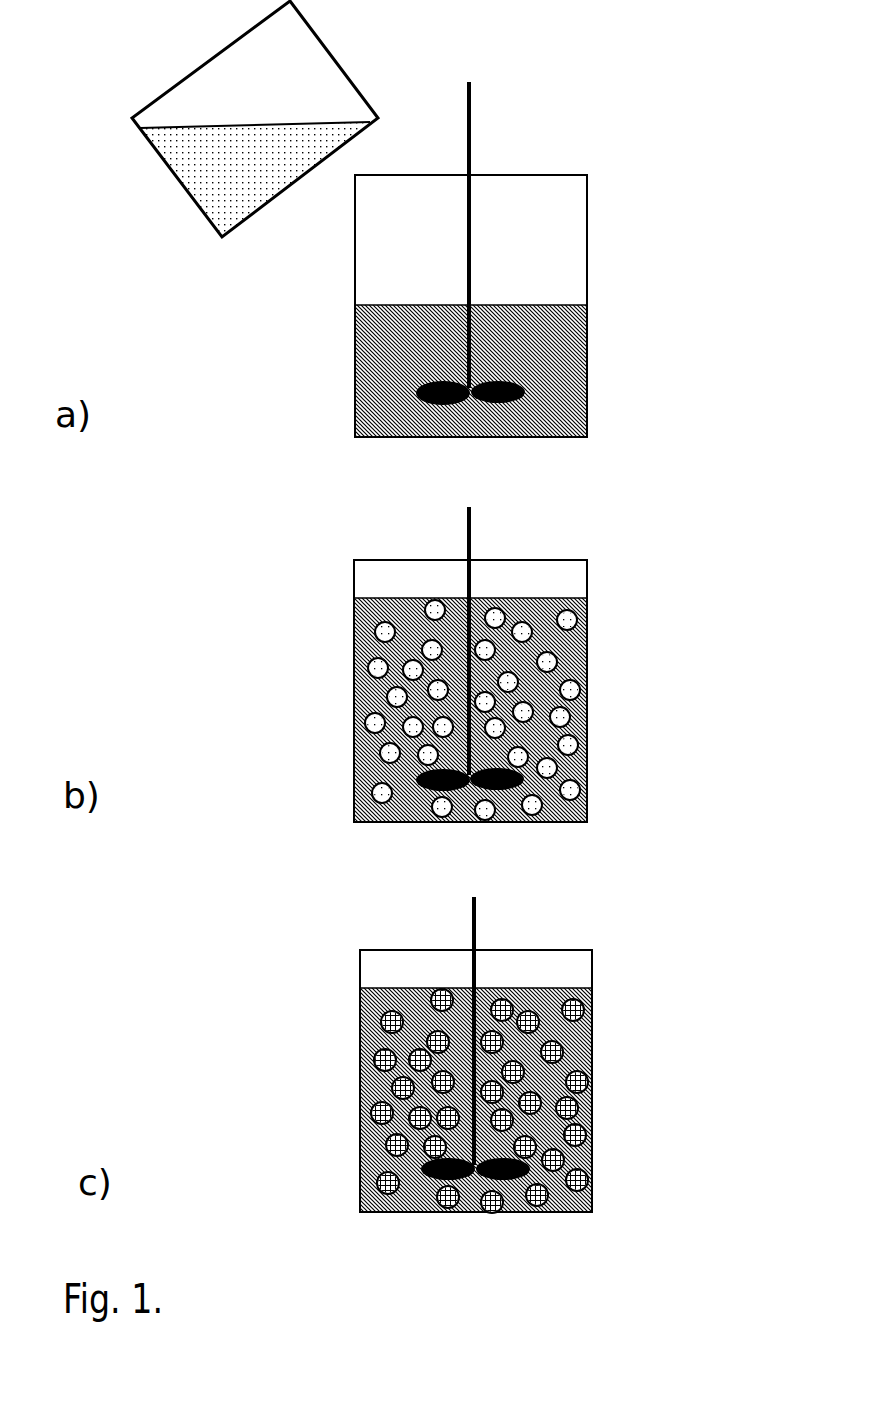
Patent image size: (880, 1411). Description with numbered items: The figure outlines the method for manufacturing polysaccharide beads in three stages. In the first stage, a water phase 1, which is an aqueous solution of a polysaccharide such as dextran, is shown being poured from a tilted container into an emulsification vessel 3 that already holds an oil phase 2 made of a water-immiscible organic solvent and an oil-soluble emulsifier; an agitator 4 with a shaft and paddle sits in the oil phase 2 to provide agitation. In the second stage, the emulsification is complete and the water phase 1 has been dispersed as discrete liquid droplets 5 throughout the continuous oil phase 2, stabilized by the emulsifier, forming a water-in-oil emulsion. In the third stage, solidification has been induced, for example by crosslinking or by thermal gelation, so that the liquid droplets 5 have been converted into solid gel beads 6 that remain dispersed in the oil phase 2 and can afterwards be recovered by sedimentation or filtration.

The water phase 1 is at (225, 175).
The oil phase 2 is at (574, 350).
The emulsification vessel 3 is at (587, 219).
The agitator 4 is at (440, 379).
The liquid droplets 5 is at (368, 662).
The gel beads 6 is at (374, 1053).